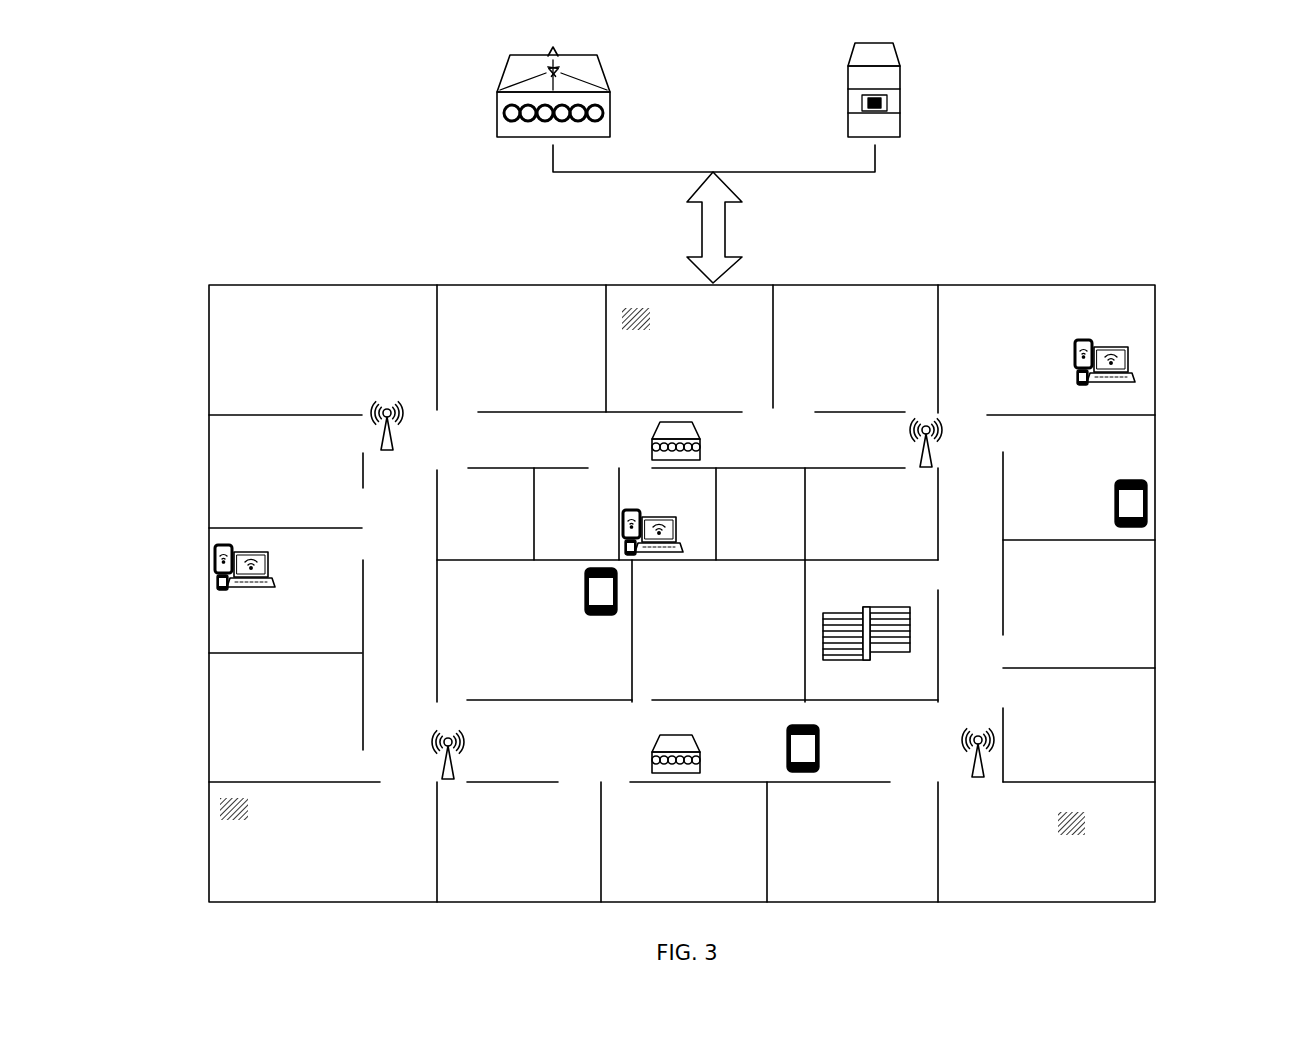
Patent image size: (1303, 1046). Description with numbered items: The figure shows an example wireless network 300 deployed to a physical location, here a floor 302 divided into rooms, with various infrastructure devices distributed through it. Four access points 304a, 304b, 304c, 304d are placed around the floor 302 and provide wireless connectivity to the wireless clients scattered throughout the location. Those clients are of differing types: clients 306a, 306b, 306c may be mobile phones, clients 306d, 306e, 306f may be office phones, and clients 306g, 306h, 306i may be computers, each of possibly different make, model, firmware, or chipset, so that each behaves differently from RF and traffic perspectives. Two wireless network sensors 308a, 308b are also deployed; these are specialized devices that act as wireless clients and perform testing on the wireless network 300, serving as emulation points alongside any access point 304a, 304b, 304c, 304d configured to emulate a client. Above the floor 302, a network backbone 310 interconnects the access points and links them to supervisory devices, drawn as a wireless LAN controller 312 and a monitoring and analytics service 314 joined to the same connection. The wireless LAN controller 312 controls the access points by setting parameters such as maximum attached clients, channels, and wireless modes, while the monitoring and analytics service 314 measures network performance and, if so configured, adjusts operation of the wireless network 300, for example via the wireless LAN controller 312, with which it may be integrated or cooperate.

The wireless network 300 is at (1216, 116).
The floor 302 is at (216, 914).
The access point 304a is at (358, 392).
The access point 304b is at (949, 451).
The access point 304c is at (418, 727).
The access point 304d is at (971, 714).
The client 306a is at (826, 748).
The client 306b is at (596, 630).
The client 306c is at (1098, 495).
The client 306d is at (654, 351).
The client 306e is at (251, 840).
The client 306f is at (1062, 851).
The client 306g is at (246, 601).
The client 306h is at (694, 537).
The client 306i is at (1063, 360).
The wireless network sensor 308a is at (638, 453).
The wireless network sensor 308b is at (638, 752).
The network backbone 310 is at (686, 230).
The wireless LAN controller (WLC) 312 is at (480, 90).
The monitoring and analytics service 314 is at (894, 152).